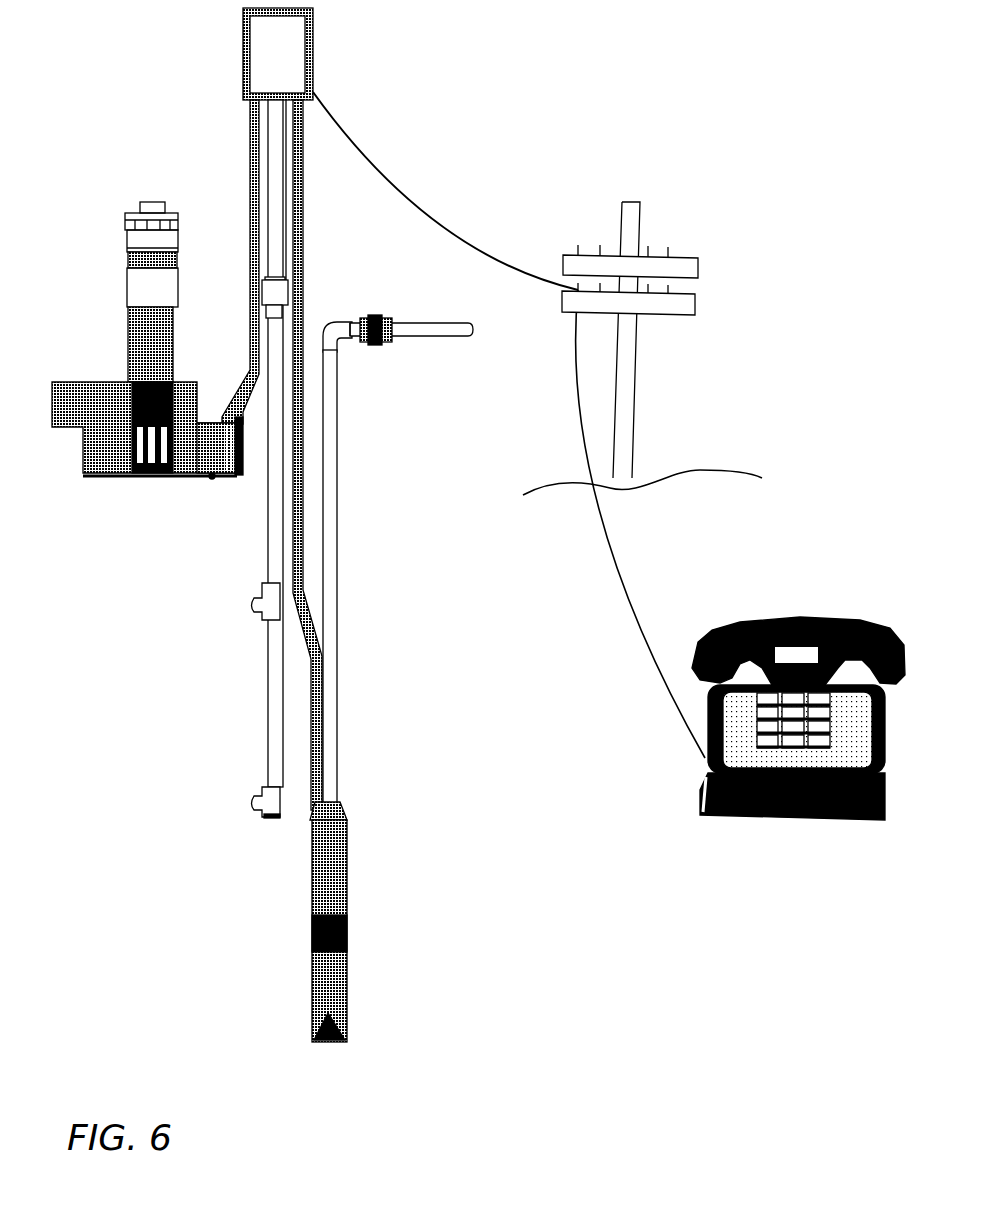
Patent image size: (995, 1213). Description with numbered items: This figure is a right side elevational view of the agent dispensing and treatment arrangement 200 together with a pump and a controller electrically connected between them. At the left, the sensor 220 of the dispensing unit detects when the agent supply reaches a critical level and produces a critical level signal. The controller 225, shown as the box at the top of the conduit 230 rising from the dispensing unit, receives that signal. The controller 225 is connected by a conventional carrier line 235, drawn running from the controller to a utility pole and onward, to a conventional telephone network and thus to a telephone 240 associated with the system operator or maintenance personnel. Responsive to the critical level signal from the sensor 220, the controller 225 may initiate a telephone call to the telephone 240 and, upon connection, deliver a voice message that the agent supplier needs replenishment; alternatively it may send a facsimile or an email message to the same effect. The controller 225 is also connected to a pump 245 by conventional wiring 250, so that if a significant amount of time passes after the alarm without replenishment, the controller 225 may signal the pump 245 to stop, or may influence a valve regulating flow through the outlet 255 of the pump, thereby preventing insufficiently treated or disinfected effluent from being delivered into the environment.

The fluid dispensing unit 200 is at (68, 483).
The sensor 220 is at (208, 478).
The controller 225 is at (313, 62).
The outer conduit 230 is at (249, 162).
The carrier line 235 is at (382, 158).
The telephone 240 is at (766, 822).
The pump 245 is at (312, 848).
The wiring 250 is at (307, 806).
The outlet 255 is at (485, 357).